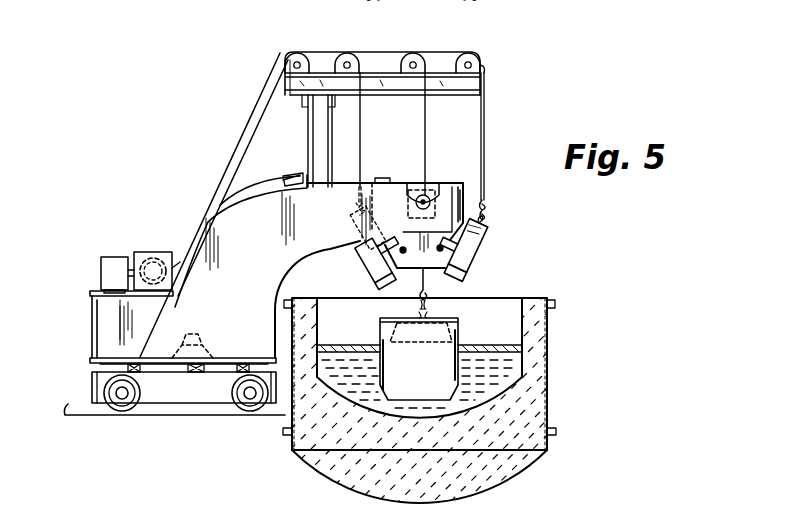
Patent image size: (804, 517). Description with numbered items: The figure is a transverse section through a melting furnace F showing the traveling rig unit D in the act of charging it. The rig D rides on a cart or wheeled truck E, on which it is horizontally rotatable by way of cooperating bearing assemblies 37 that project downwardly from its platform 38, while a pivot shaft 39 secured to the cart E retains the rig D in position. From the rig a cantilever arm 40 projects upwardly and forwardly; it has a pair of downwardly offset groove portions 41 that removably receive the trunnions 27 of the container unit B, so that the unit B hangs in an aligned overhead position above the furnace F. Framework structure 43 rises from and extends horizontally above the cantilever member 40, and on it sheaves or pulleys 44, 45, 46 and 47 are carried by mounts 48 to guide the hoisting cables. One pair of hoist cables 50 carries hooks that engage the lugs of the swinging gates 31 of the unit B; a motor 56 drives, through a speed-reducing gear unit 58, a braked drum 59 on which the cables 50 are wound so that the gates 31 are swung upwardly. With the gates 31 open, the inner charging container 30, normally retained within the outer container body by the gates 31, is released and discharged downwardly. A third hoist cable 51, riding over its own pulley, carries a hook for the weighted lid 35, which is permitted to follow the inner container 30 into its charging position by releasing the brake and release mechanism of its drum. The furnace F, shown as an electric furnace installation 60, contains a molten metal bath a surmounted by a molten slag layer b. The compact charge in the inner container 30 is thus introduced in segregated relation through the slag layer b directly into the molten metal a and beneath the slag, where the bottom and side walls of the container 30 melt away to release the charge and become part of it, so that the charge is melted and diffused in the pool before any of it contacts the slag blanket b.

The trunnions 27 is at (430, 197).
The inner charging container 30 is at (460, 338).
The swinging gates 31 is at (376, 282).
The weighted lid 35 is at (455, 332).
The bearing assemblies 37 is at (268, 364).
The platform 38 is at (92, 359).
The pivot shaft 39 is at (200, 372).
The cantilever arm 40 is at (302, 262).
The downwardly offset groove portions 41 is at (418, 200).
The framework structure 43 is at (308, 126).
The sheave 44 is at (297, 52).
The sheave 45 is at (347, 52).
The sheave 46 is at (413, 52).
The sheave 47 is at (468, 52).
The mounts 48 is at (478, 63).
The hoist cables 50 is at (360, 128).
The third hoist cable 51 is at (425, 122).
The motor 56 is at (100, 270).
The speed-reducing gear unit 58 is at (140, 256).
The drum 59 is at (148, 252).
The electric furnace installation 60 is at (548, 323).
The molten metal bath a is at (362, 378).
The slag layer b is at (355, 345).
The container unit B is at (469, 188).
The traveling rig unit D is at (238, 233).
The wheeled truck E is at (92, 386).
The furnace F is at (547, 379).